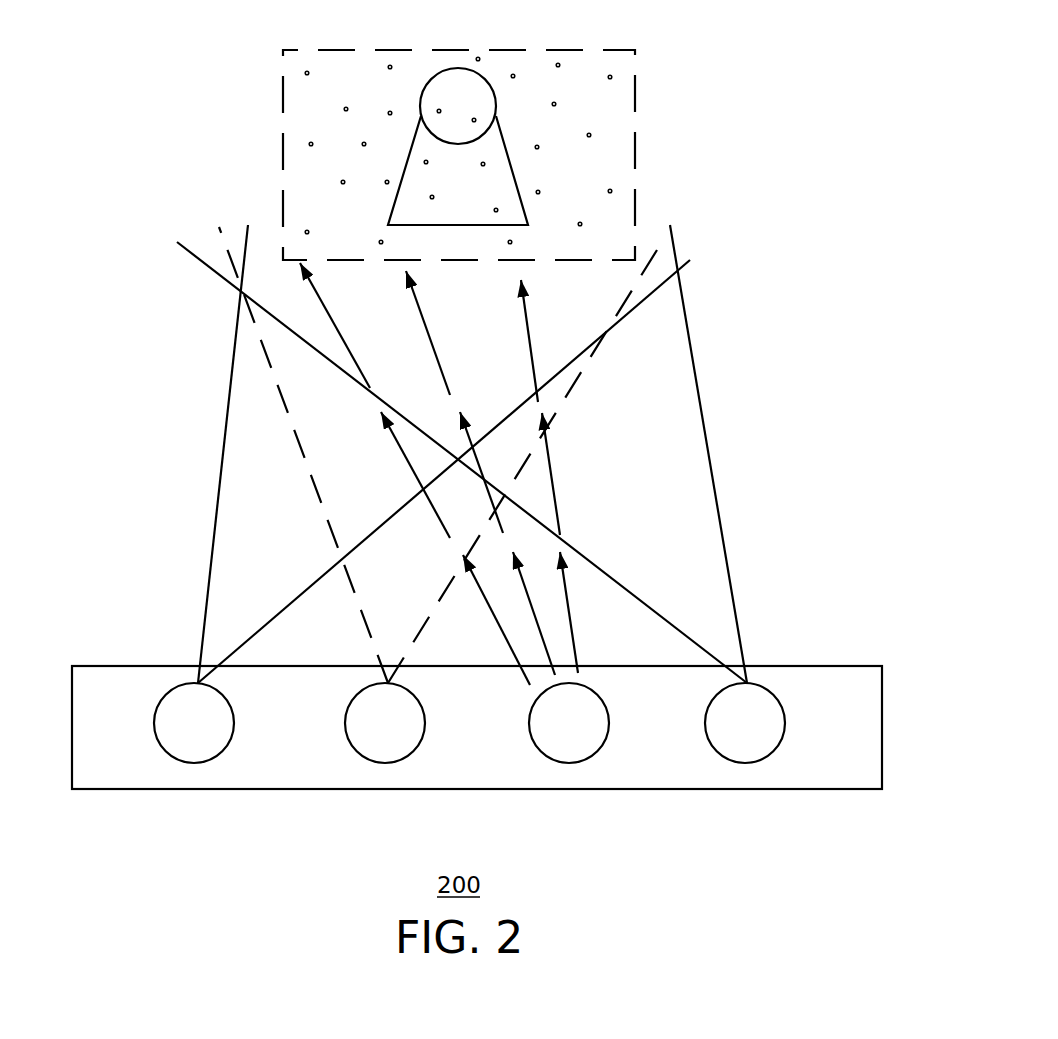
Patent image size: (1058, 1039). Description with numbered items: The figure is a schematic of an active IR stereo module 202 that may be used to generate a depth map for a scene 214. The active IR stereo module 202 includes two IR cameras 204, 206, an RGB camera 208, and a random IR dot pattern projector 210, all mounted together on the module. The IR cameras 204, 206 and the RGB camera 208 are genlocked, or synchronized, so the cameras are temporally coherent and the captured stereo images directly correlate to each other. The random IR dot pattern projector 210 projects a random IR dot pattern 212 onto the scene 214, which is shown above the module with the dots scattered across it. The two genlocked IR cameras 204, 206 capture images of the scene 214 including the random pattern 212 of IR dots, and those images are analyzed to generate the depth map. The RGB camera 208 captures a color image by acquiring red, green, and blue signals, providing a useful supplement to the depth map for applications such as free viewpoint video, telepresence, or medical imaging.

The active IR stereo module 202 is at (123, 665).
The IR camera 204 is at (194, 735).
The IR camera 206 is at (745, 735).
The RGB camera 208 is at (388, 735).
The random IR dot pattern projector 210 is at (569, 735).
The random IR dot pattern 212 is at (635, 113).
The scene 214 is at (458, 102).